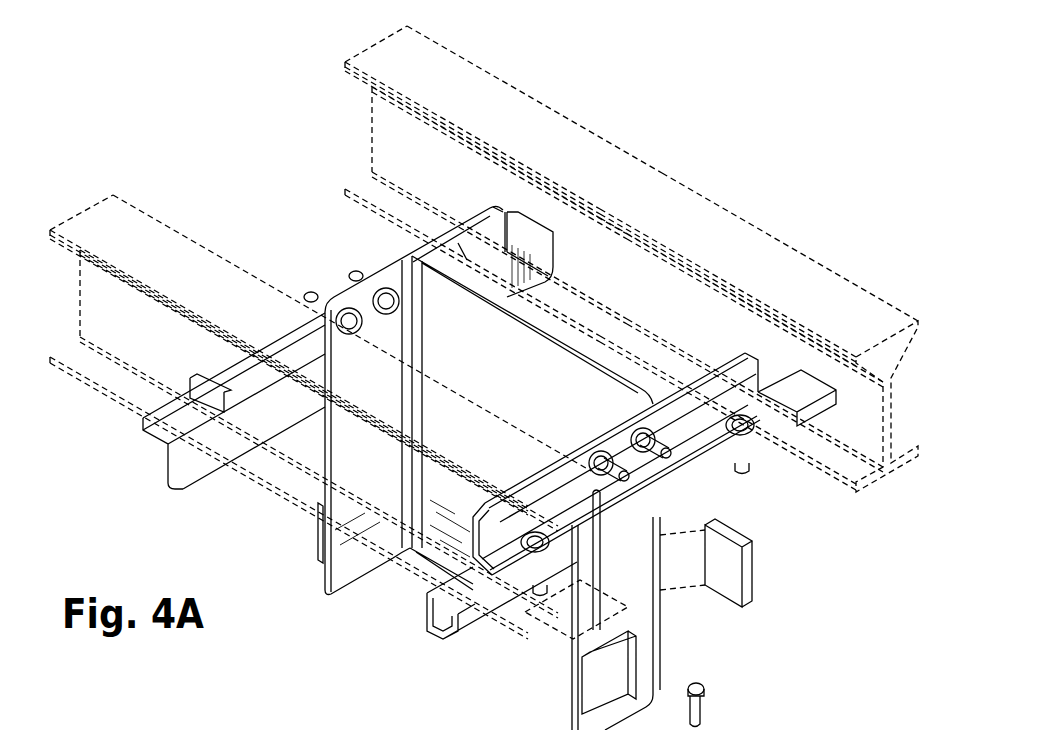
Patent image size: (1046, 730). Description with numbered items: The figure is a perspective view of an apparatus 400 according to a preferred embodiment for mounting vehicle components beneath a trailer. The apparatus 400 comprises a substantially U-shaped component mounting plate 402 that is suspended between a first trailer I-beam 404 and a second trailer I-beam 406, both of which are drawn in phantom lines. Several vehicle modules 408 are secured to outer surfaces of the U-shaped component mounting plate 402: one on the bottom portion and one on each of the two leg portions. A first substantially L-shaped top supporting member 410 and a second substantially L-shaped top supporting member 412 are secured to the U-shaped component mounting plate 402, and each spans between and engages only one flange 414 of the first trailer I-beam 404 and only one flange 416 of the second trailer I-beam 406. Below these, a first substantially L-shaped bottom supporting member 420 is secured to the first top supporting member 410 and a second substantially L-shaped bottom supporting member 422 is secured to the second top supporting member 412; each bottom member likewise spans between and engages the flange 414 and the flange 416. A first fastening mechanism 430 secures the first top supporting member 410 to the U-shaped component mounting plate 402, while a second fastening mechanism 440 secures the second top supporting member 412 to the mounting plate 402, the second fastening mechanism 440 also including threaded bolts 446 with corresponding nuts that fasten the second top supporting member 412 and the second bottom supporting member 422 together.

The apparatus 400 is at (230, 104).
The U-shaped component mounting plate 402 is at (507, 617).
The first trailer I-beam 404 is at (62, 222).
The second trailer I-beam 406 is at (402, 28).
The vehicle module 408 is at (318, 545).
The first L-shaped top supporting member 410 is at (705, 400).
The second L-shaped top supporting member 412 is at (485, 235).
The flange of the first trailer I-beam 414 is at (577, 612).
The flange of the second trailer I-beam 416 is at (848, 467).
The first L-shaped bottom supporting member 420 is at (797, 402).
The second L-shaped bottom supporting member 422 is at (212, 462).
The first fastening mechanism 430 is at (668, 389).
The second fastening mechanism 440 is at (331, 294).
The threaded bolts 446 is at (704, 690).